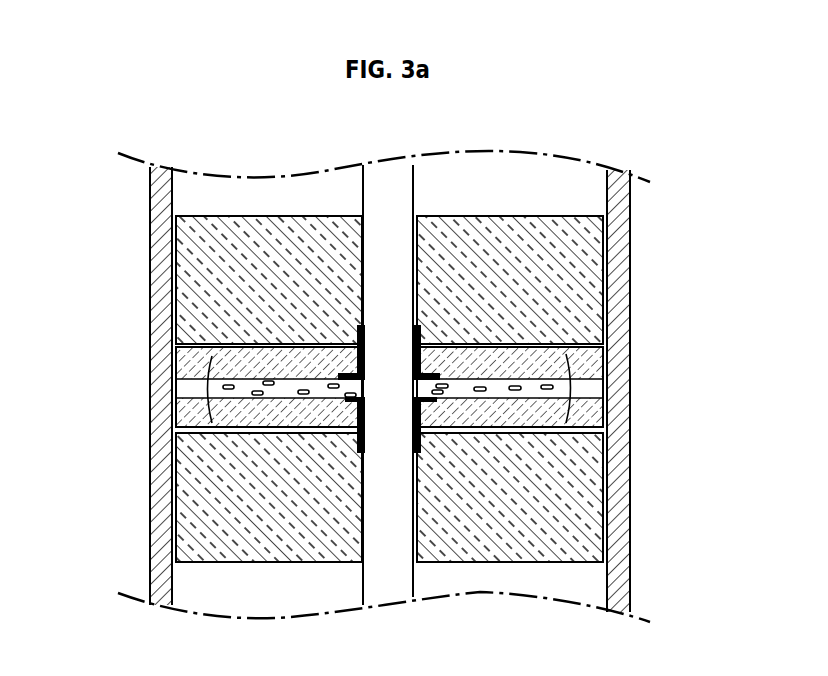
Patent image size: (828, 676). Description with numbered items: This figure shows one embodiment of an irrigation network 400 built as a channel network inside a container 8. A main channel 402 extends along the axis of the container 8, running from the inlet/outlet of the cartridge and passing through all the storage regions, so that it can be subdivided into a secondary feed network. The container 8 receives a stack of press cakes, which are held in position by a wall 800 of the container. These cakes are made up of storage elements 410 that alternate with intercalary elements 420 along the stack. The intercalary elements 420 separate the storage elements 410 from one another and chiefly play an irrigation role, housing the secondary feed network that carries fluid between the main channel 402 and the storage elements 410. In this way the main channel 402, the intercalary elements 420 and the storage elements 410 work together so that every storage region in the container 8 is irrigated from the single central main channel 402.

The container 8 is at (142, 465).
The irrigation network 400 is at (441, 426).
The main channel 402 is at (378, 583).
The storage elements 410 is at (200, 283).
The intercalary elements 420 is at (587, 403).
The wall 800 is at (160, 392).